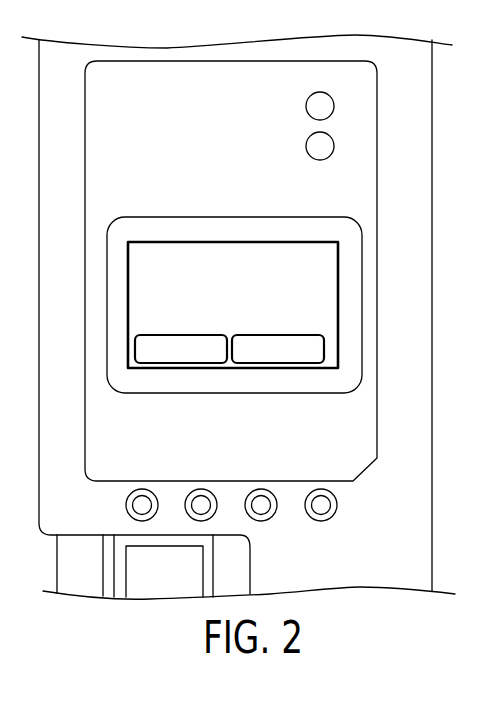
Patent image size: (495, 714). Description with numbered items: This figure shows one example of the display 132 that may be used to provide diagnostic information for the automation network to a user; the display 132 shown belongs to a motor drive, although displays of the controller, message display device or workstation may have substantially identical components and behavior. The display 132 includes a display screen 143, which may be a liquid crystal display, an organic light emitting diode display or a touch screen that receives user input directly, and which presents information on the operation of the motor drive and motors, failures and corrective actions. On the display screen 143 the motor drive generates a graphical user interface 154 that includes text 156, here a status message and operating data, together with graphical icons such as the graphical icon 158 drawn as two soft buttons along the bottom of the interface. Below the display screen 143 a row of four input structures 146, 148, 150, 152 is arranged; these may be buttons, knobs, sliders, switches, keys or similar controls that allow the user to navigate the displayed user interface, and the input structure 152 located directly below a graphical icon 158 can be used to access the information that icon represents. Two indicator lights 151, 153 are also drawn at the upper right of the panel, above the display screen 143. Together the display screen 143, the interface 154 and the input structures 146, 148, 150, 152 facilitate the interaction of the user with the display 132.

The display 132 is at (171, 203).
The display screen 143 is at (275, 239).
The status indicator light 151 is at (306, 100).
The status indicator light 153 is at (306, 140).
The graphical user interface 154 is at (323, 277).
The text 156 is at (233, 253).
The graphical icon 158 is at (183, 363).
The input structure 146 is at (126, 508).
The input structure 148 is at (201, 489).
The input structure 150 is at (261, 521).
The input structure 152 is at (337, 508).